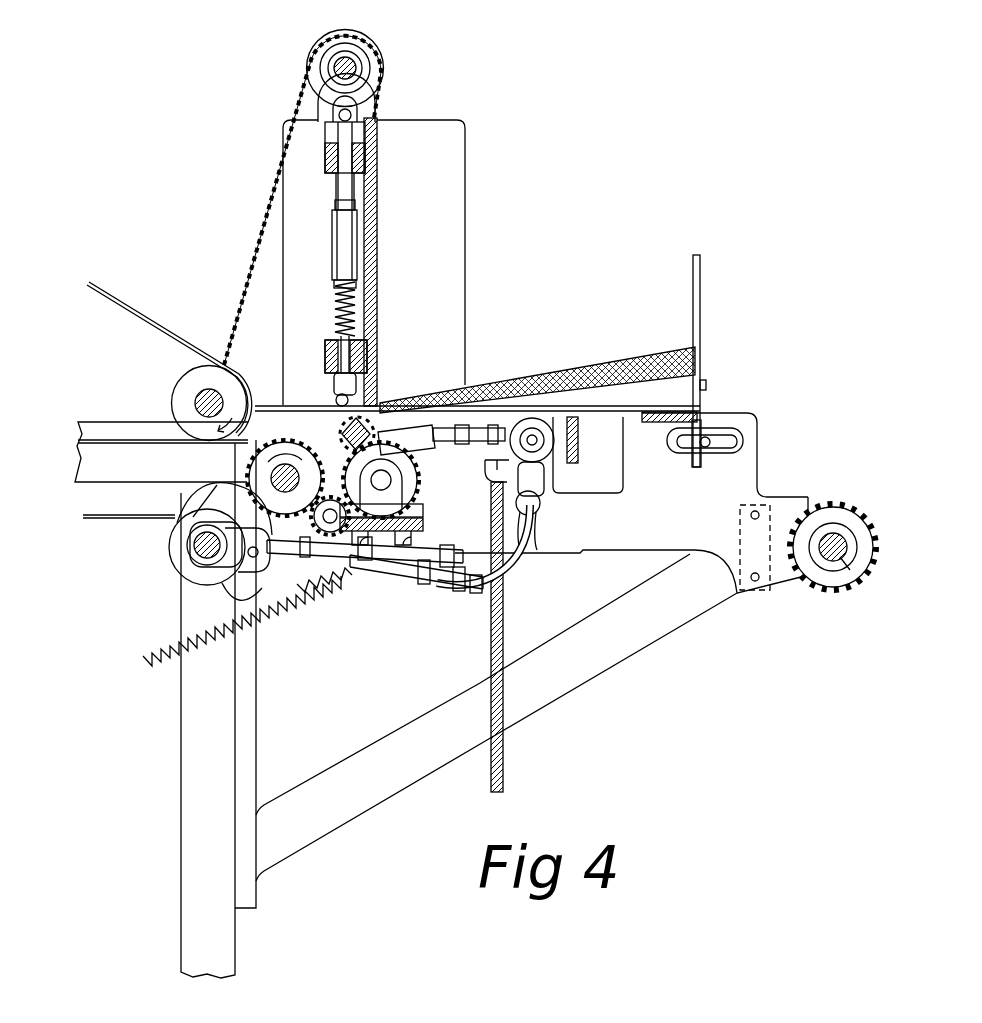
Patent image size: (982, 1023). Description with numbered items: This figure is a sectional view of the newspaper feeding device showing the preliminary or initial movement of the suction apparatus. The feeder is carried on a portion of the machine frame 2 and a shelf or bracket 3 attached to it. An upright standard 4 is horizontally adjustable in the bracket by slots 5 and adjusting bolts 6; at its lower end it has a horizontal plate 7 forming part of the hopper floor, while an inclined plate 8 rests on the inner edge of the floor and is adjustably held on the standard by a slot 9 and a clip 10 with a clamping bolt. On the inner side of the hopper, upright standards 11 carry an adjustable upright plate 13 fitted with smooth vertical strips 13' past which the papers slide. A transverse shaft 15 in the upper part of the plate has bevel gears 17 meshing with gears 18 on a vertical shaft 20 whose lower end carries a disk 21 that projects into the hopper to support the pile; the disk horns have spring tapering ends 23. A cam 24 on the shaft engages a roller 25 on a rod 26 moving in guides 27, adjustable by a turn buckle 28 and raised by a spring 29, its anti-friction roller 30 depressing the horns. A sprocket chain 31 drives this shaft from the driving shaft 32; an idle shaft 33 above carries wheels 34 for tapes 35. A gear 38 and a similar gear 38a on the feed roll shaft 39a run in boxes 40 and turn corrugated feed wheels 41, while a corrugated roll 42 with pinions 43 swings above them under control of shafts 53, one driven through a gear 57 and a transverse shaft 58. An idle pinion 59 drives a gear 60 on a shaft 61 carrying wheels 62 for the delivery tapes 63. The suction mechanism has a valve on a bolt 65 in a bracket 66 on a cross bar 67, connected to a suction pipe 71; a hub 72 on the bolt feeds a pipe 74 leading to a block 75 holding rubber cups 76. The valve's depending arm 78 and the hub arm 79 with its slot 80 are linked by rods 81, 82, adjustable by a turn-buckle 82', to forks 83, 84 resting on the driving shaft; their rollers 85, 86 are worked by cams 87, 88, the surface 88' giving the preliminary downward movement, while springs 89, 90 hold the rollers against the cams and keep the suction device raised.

The frame 2 is at (181, 760).
The shelf or bracket 3 is at (532, 647).
The upright standard 4 is at (705, 403).
The slots 5 is at (740, 438).
The adjusting bolts 6 is at (712, 445).
The horizontal plate 7 is at (645, 430).
The plate 8 is at (698, 372).
The slot 9 is at (702, 388).
The clip 10 is at (690, 388).
The upright standards 11 is at (283, 178).
The upright plate 13 is at (416, 241).
The vertical strips 13' is at (410, 260).
The transverse shaft 15 is at (352, 66).
The bevel gears 17 is at (385, 80).
The bevel gears 18 is at (315, 105).
The vertical shaft 20 is at (340, 190).
The disks 21 is at (300, 407).
The tapering ends 23 is at (370, 400).
The cam 24 is at (328, 82).
The roller 25 is at (337, 113).
The rod 26 is at (345, 160).
The guides 27 is at (366, 150).
The turn buckle 28 is at (334, 235).
The spring 29 is at (342, 302).
The anti-friction roller 30 is at (340, 392).
The sprocket chain 31 is at (262, 225).
The driving shaft 32 is at (196, 548).
The idle shaft 33 is at (200, 400).
The wheels 34 is at (175, 389).
The tapes 35 is at (128, 300).
The gear 38 is at (400, 493).
The gear 38a is at (405, 500).
The feed roll shaft 39a is at (422, 527).
The boxes 40 is at (381, 519).
The feed wheels 41 is at (342, 436).
The corrugated roll 42 is at (350, 425).
The pinions 43 is at (335, 404).
The shafts 53 is at (612, 555).
The gear 57 is at (830, 590).
The transverse shaft 58 is at (833, 586).
The idle pinion 59 is at (335, 590).
The gear 60 is at (228, 478).
The shaft 61 is at (270, 480).
The wheels 62 is at (215, 490).
The tapes 63 is at (161, 452).
The bolt 65 is at (530, 432).
The bracket 66 is at (555, 420).
The cross bar 67 is at (578, 434).
The suction pipe 71 is at (505, 605).
The hub 72 is at (576, 462).
The pipe 74 is at (492, 428).
The block 75 is at (406, 440).
The cups 76 is at (483, 466).
The depending arm 78 is at (555, 465).
The arm 79 is at (545, 500).
The slot 80 is at (555, 485).
The rod 81 is at (470, 590).
The rod 82 is at (504, 547).
The turn-buckle 82' is at (452, 638).
The fork 83 is at (410, 582).
The fork 84 is at (395, 575).
The roller 85 is at (290, 585).
The roller 86 is at (215, 582).
The cam 87 is at (220, 504).
The cam 88 is at (178, 564).
The cam surface 88' is at (157, 579).
The spring 89 is at (335, 592).
The spring 90 is at (147, 668).